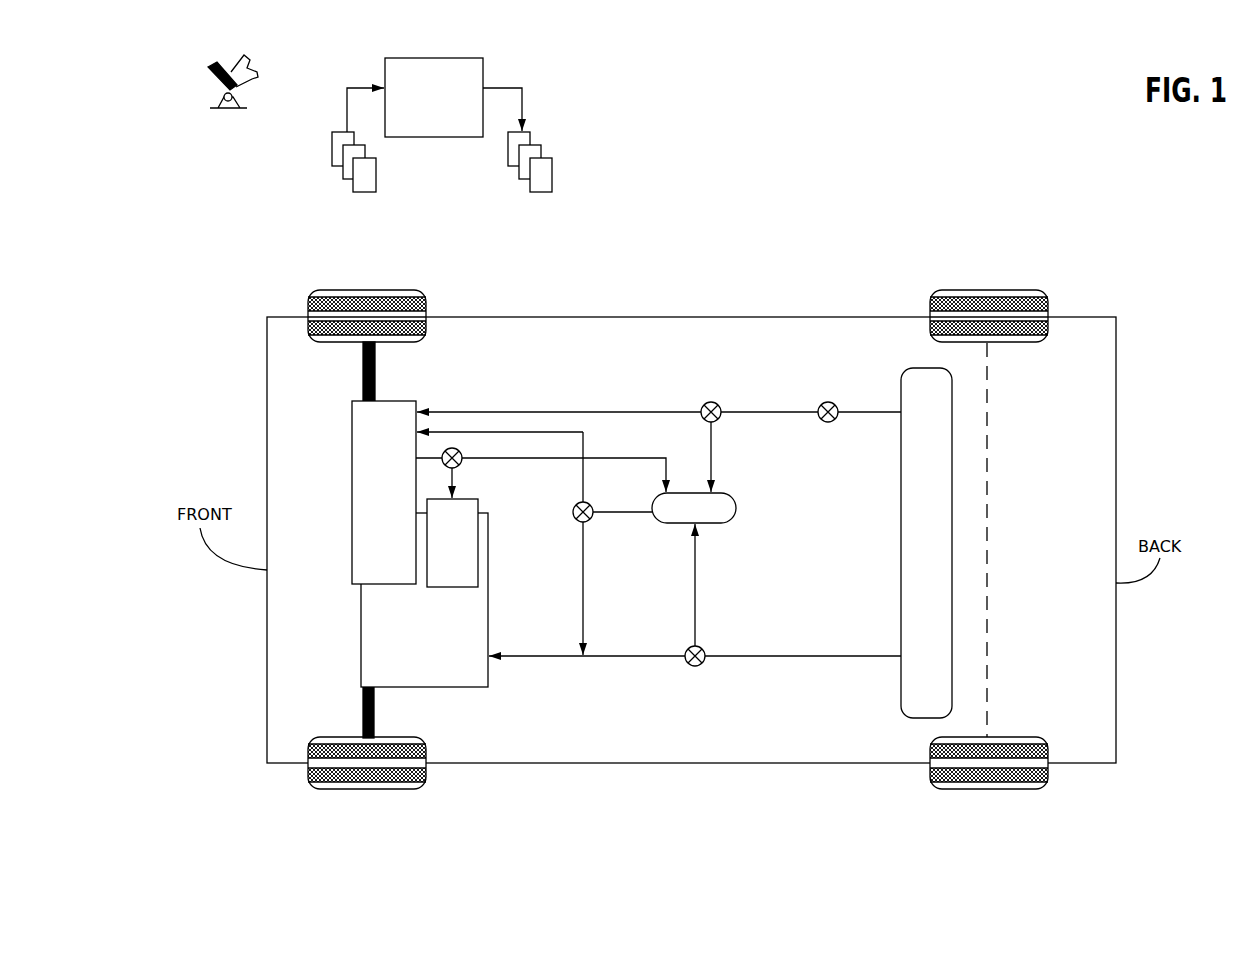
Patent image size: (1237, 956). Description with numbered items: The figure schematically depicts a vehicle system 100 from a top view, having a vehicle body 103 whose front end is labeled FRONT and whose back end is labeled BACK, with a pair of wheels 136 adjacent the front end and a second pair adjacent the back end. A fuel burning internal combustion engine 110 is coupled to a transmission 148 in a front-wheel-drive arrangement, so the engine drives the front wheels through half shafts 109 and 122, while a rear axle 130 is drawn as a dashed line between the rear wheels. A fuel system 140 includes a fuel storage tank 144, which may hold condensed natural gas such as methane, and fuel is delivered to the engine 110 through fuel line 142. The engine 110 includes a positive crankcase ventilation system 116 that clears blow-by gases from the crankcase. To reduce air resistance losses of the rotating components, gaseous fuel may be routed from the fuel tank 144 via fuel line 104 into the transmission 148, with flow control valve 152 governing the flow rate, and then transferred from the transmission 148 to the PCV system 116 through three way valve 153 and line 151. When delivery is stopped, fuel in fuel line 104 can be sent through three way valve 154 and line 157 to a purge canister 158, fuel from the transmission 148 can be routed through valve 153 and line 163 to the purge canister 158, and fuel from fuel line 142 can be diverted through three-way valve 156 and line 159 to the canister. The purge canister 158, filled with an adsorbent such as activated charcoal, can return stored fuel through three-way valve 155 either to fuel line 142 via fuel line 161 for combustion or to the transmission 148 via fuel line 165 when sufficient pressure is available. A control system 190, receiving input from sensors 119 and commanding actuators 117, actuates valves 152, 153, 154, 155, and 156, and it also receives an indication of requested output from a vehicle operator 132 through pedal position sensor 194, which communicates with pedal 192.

The vehicle system 100 is at (1088, 246).
The vehicle body 103 is at (521, 316).
The fuel line 104 is at (603, 411).
The half shaft 109 is at (363, 718).
The internal combustion engine 110 is at (424, 600).
The positive crankcase ventilation (PCV) system 116 is at (452, 543).
The actuators 117 is at (528, 164).
The sensors 119 is at (365, 164).
The half shaft 122 is at (363, 364).
The rear axle 130 is at (988, 405).
The vehicle operator 132 is at (243, 70).
The wheels 136 is at (339, 290).
The fuel system 140 is at (829, 669).
The fuel line 142 is at (784, 656).
The fuel storage tank 144 is at (926, 543).
The transmission 148 is at (384, 492).
The line 151 is at (457, 480).
The flow control valve 152 is at (825, 402).
The three way valve 153 is at (461, 451).
The three way valve 154 is at (702, 406).
The three-way valve 155 is at (573, 512).
The three-way valve 156 is at (686, 650).
The line 157 is at (712, 452).
The purge canister 158 is at (694, 508).
The line 159 is at (696, 598).
The fuel line 161 is at (584, 590).
The line 163 is at (642, 457).
The fuel line 165 is at (583, 432).
The control system 190 is at (434, 97).
The pedal 192 is at (214, 85).
The pedal position (PP) sensor 194 is at (236, 97).